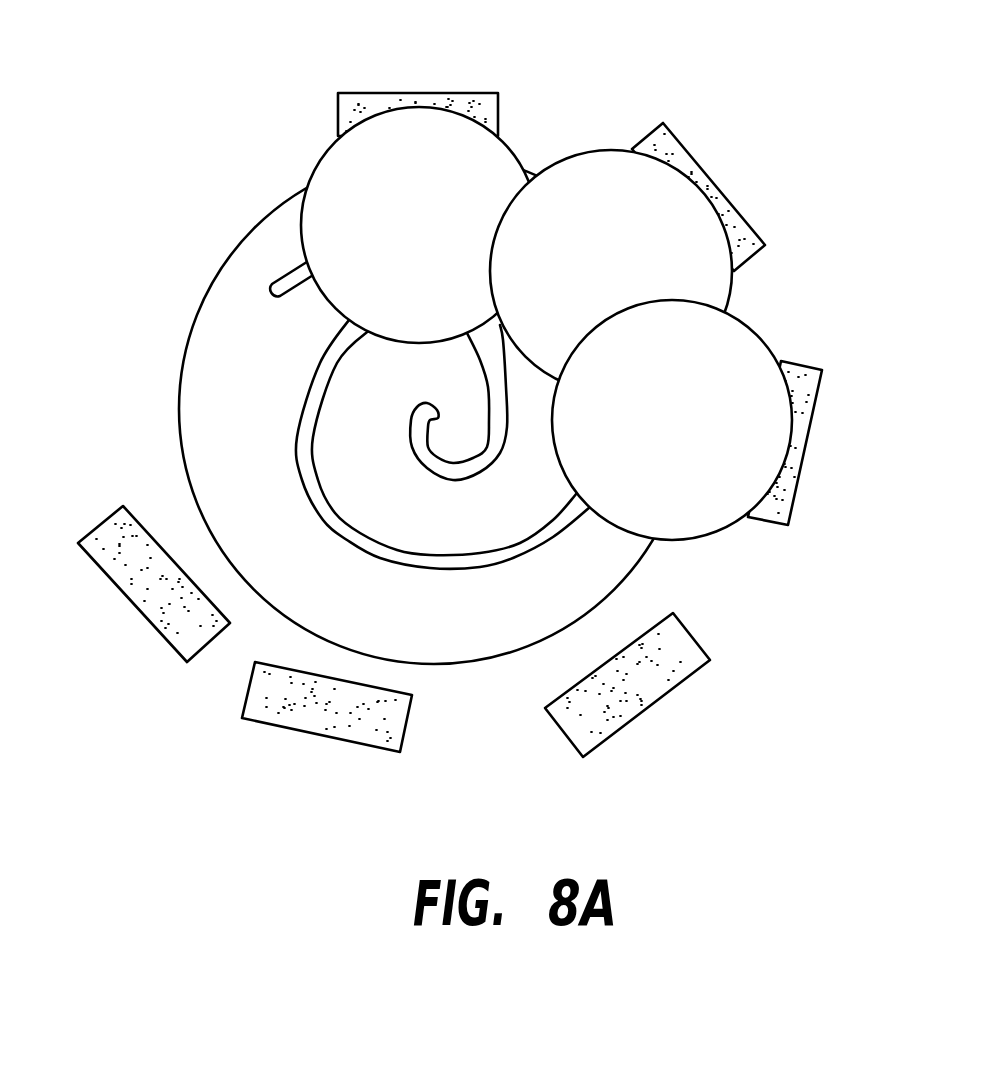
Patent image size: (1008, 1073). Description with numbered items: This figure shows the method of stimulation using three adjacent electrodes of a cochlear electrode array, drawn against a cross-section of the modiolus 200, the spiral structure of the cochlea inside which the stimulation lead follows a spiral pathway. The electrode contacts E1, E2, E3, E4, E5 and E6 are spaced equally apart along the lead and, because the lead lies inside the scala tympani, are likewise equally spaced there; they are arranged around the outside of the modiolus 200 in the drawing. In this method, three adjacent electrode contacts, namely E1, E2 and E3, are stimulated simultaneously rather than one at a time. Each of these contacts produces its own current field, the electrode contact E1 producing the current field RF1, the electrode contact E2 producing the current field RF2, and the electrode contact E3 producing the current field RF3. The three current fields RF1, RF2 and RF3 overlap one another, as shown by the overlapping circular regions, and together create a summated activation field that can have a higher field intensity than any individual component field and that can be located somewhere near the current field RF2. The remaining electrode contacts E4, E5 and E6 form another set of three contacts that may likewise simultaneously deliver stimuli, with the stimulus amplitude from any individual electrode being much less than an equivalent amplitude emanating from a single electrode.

The modiolus 200 is at (230, 258).
The electrode contact E1 is at (417, 92).
The electrode contact E2 is at (713, 182).
The electrode contact E3 is at (803, 445).
The electrode contact E4 is at (647, 707).
The electrode contact E5 is at (320, 738).
The electrode contact E6 is at (132, 603).
The current field RF1 is at (419, 225).
The current field RF2 is at (611, 271).
The current field RF3 is at (672, 420).